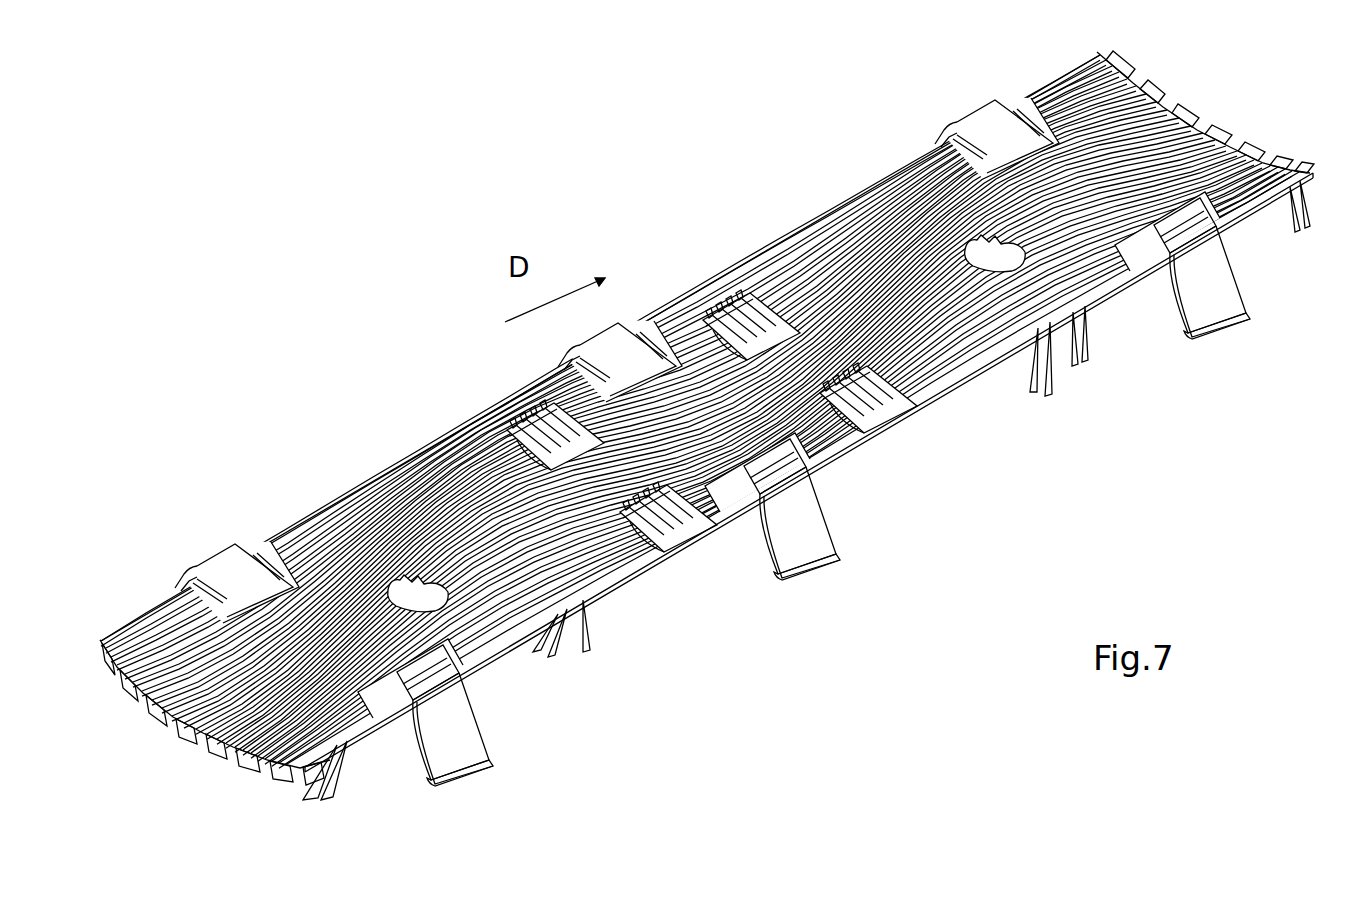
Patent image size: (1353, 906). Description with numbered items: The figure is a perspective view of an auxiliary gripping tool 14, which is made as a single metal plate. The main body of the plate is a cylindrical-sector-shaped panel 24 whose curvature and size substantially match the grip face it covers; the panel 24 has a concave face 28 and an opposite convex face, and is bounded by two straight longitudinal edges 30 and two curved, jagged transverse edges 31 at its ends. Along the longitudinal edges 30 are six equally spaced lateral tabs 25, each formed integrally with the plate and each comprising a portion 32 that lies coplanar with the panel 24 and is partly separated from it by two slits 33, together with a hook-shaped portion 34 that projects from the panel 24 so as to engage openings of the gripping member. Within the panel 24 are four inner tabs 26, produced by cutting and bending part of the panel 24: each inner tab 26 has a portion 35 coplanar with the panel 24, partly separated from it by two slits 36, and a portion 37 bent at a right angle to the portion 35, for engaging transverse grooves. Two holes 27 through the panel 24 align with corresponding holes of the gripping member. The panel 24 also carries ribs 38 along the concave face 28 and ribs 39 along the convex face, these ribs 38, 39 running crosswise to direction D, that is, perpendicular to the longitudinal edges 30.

The auxiliary gripping tool 14 is at (808, 196).
The cylindrical-sector-shaped panel 24 is at (998, 335).
The lateral tabs 25 is at (980, 105).
The inner tabs 26 is at (727, 399).
The holes 27 is at (408, 578).
The concave face 28 is at (441, 430).
The straight longitudinal edges 30 is at (430, 448).
The curved, jagged transverse edges 31 is at (195, 741).
The portion coplanar with panel 32 is at (995, 105).
The slits 33 is at (1030, 120).
The hook-shaped portion 34 is at (940, 140).
The portion coplanar with panel 35 is at (758, 315).
The slits 36 is at (780, 320).
The bent portion 37 is at (702, 297).
The ribs 38 is at (1305, 205).
The ribs 39 is at (1080, 360).